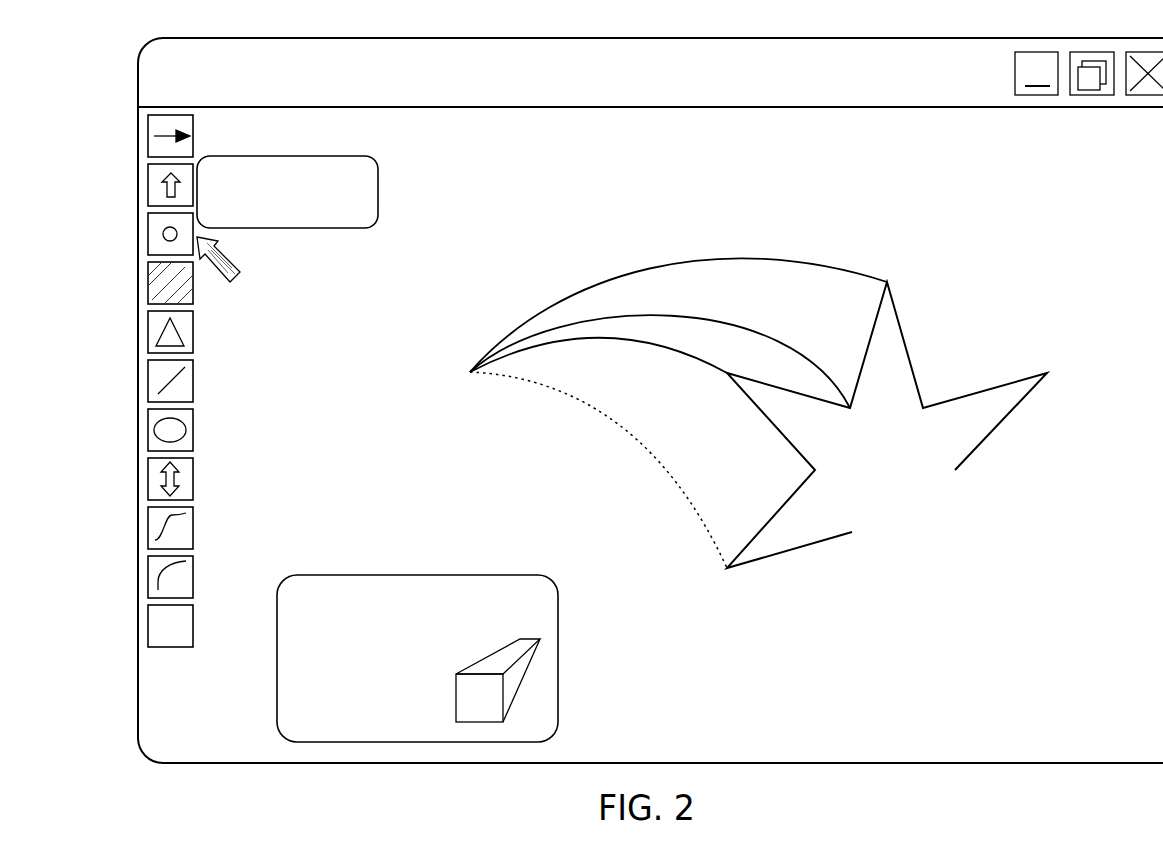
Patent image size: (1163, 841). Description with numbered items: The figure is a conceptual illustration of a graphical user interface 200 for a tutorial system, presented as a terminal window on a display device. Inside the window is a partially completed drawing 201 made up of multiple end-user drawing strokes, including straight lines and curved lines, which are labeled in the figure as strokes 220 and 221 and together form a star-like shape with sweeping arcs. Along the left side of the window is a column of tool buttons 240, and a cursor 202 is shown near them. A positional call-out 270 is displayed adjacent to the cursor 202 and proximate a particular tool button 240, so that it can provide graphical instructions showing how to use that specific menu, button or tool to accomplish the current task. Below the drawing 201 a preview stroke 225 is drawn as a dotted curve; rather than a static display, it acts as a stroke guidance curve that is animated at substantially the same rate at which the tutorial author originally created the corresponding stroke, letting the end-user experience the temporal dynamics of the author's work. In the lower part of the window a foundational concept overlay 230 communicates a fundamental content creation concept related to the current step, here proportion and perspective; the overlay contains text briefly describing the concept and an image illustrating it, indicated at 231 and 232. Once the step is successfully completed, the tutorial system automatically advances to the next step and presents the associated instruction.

The graphical user interface 200 is at (747, 66).
The partially completed drawing 201 is at (1055, 280).
The cursor 202 is at (238, 280).
The star shape lines 220 is at (910, 363).
The straight lines 221 is at (810, 258).
The preview stroke 225 is at (633, 436).
The foundational concept overlay 230 is at (418, 661).
The image 231 is at (525, 686).
The tip text 232 is at (268, 660).
The tool buttons 240 is at (180, 672).
The positional call-out 270 is at (288, 229).